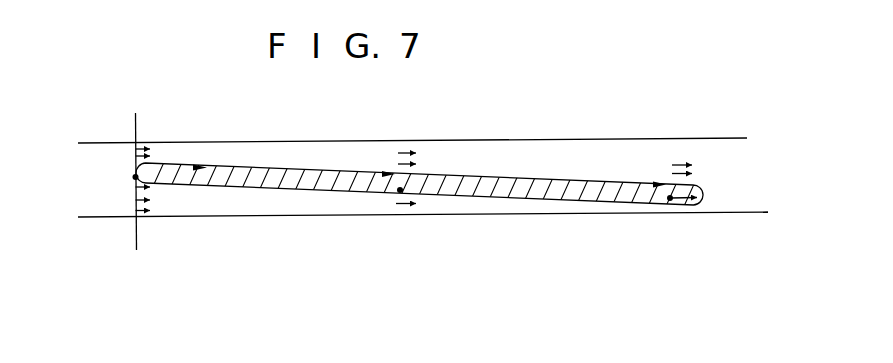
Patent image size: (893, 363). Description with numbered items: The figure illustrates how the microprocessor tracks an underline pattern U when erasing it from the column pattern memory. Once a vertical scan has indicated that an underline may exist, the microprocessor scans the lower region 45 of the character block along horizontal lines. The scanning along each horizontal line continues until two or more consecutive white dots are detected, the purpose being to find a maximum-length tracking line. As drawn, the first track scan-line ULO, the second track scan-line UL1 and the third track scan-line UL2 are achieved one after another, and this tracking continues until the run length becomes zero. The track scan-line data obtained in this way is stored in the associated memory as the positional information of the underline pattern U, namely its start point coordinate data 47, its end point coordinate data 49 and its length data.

The lower region of the character block 45 is at (287, 207).
The start point coordinate data 47 is at (135, 177).
The end point coordinate data 49 is at (704, 193).
The first track scan-line ULO is at (237, 179).
The underline pattern U is at (348, 189).
The second track scan-line UL1 is at (484, 188).
The third track scan-line UL2 is at (678, 203).